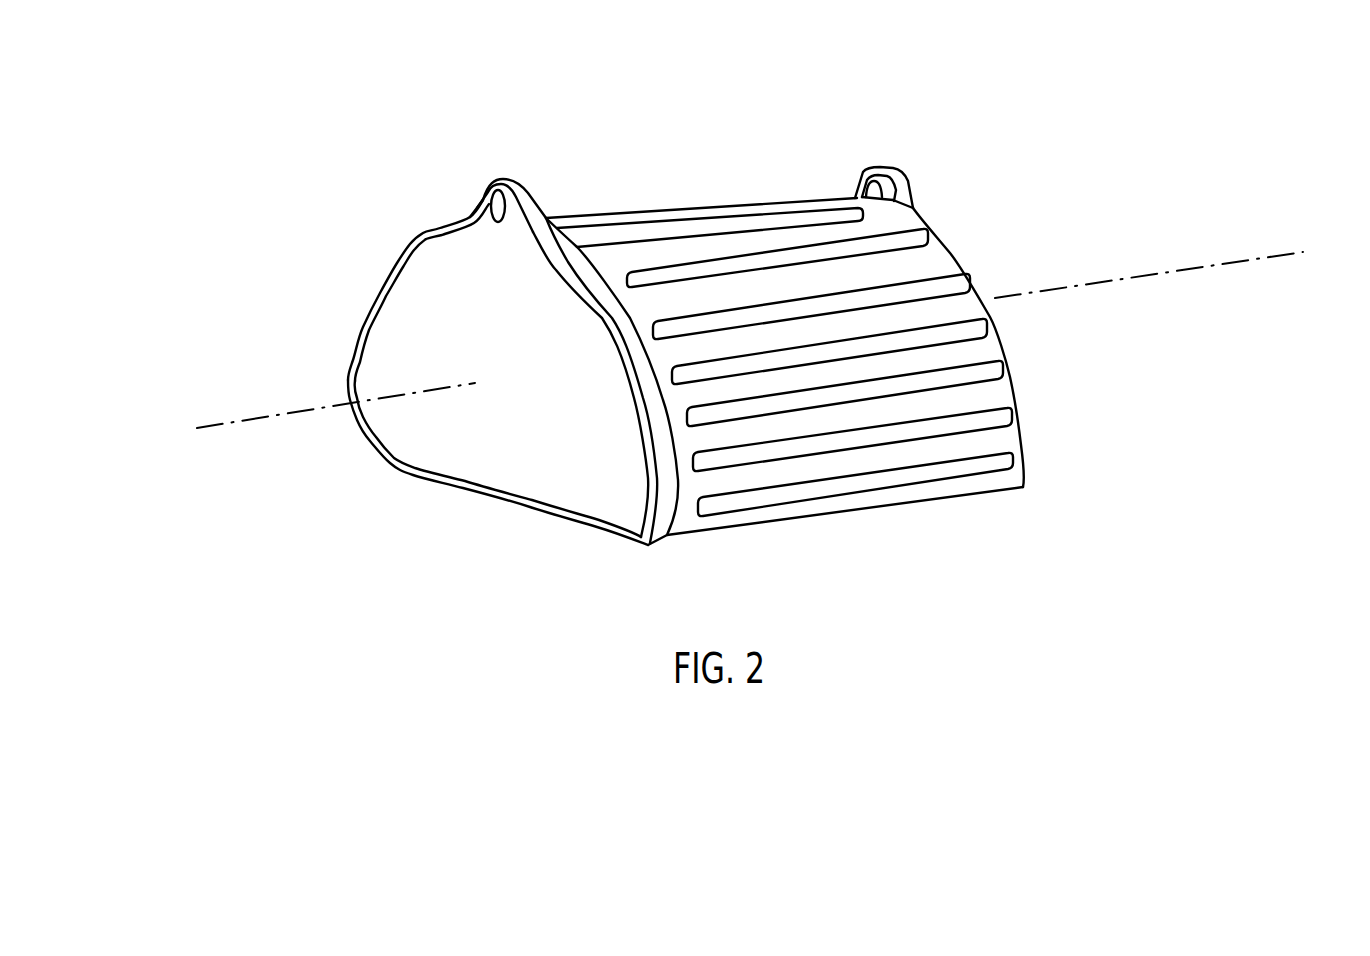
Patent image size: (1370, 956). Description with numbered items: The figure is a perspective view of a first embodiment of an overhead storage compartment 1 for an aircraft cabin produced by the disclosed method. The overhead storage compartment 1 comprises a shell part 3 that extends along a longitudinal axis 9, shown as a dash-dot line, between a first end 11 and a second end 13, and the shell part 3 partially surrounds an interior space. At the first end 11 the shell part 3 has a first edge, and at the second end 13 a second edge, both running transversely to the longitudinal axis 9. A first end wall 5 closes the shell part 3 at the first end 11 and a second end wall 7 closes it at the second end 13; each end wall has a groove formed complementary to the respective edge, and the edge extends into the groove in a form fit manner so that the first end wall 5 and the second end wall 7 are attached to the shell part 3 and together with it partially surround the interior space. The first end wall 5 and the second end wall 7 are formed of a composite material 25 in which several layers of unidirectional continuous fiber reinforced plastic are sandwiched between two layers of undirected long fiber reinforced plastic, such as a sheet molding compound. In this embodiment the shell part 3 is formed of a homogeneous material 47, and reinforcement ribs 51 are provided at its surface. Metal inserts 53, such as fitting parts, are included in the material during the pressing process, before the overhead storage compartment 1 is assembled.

The overhead storage compartment 1 is at (362, 114).
The shell part 3 is at (766, 235).
The first end wall 5 is at (422, 307).
The second end wall 7 is at (915, 204).
The longitudinal axis 9 is at (1143, 272).
The first end 11 is at (715, 485).
The second end 13 is at (992, 394).
The composite material 25 is at (470, 448).
The homogeneous material 47 is at (690, 290).
The reinforcement ribs 51 is at (900, 388).
The metal insert 53 is at (487, 203).